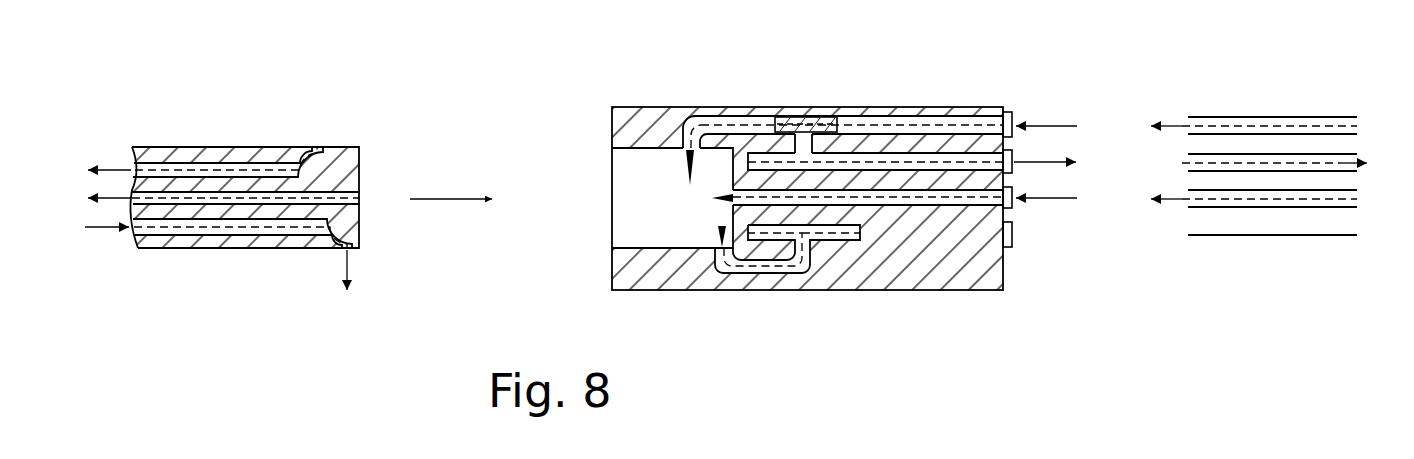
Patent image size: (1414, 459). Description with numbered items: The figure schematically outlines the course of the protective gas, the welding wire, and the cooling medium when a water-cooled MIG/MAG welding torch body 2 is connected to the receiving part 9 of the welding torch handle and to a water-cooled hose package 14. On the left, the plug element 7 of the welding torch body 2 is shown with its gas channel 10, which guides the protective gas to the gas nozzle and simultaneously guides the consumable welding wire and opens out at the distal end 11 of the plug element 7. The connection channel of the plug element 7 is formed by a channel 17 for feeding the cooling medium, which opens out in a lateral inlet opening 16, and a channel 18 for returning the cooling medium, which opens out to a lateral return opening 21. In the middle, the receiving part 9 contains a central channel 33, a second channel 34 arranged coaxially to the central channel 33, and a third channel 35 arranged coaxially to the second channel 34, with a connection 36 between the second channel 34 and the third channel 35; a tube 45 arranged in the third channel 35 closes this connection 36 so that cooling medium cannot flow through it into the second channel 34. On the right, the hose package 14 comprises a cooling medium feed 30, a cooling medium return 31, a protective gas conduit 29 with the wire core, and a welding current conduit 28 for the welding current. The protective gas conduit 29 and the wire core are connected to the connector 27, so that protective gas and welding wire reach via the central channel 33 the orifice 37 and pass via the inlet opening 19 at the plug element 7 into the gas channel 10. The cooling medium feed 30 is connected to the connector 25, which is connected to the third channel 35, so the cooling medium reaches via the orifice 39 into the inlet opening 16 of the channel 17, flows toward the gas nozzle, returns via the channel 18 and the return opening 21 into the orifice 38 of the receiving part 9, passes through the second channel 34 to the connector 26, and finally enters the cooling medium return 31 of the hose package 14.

The MIG/MAG welding torch body 2 is at (240, 186).
The plug element 7 is at (262, 146).
The channel for feeding the cooling medium 17 is at (185, 165).
The inlet opening 16 is at (318, 157).
The inlet opening 19 is at (364, 192).
The gas channel 10 is at (167, 200).
The channel for returning the cooling medium 18 is at (198, 230).
The return opening 21 is at (340, 250).
The distal end 11 is at (364, 249).
The receiving part 9 is at (839, 193).
The orifice 39 is at (678, 150).
The orifice 37 is at (727, 193).
The orifice 38 is at (745, 245).
The second channel 34 is at (767, 157).
The tube 45 is at (800, 117).
The connection 36 is at (815, 146).
The third channel 35 is at (922, 123).
The connector 25 is at (1008, 120).
The connector 26 is at (1013, 157).
The connector 27 is at (1010, 208).
The central channel 33 is at (882, 202).
The hose package 14 is at (1281, 156).
The cooling medium return 31 is at (1250, 158).
The cooling medium feed 30 is at (1283, 123).
The protective gas conduit 29 is at (1245, 203).
The welding current conduit 28 is at (1271, 237).